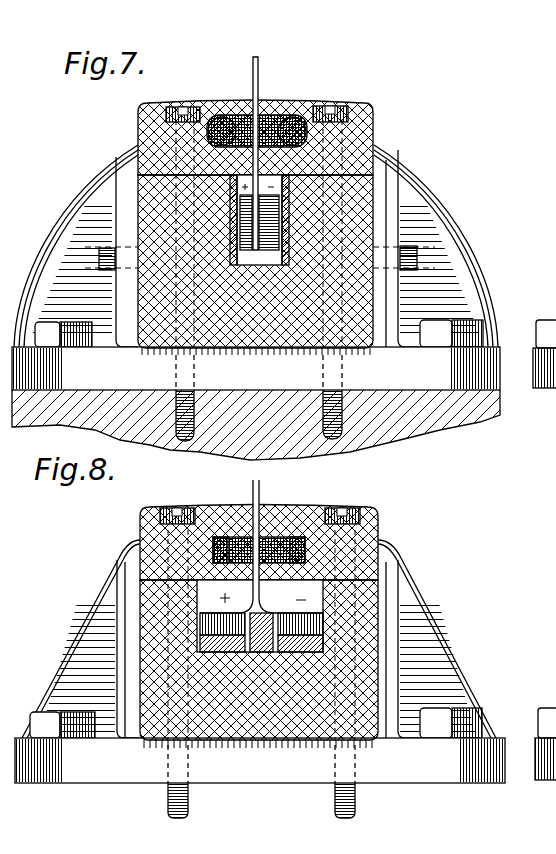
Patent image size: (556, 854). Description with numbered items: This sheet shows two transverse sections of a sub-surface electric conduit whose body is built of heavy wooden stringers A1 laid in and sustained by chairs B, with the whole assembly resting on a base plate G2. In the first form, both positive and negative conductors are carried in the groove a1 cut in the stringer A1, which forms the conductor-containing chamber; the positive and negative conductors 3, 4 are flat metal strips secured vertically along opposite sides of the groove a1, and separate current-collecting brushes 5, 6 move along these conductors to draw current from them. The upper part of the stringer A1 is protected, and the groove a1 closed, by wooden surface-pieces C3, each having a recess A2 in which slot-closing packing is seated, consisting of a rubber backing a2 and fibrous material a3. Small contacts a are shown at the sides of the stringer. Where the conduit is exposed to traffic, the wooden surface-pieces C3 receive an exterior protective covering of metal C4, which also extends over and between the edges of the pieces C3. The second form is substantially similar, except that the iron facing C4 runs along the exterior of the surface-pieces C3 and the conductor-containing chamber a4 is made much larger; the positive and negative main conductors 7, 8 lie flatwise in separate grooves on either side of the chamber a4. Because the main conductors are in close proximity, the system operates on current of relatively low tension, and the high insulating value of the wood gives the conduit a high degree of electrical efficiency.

In FIG. 7, the surface-pieces C3 is at (228, 100).
In FIG. 8, the surface-pieces C3 is at (140, 530).
In FIG. 8, the protective covering of metal C4 is at (232, 510).
In FIG. 7, the fibrous material a3 is at (266, 100).
In FIG. 8, the fibrous material a3 is at (268, 520).
In FIG. 7, the recesses A2 is at (284, 100).
In FIG. 8, the recesses A2 is at (290, 514).
In FIG. 7, the rubber backing a2 is at (316, 102).
In FIG. 8, the rubber backing a2 is at (330, 508).
In FIG. 7, the contact a is at (98, 254).
In FIG. 7, the groove a1 is at (300, 268).
In FIG. 8, the conductor-containing chamber a4 is at (260, 566).
In FIG. 7, the chairs B is at (36, 282).
In FIG. 8, the chairs B is at (447, 642).
In FIG. 7, the wooden stringers A1 is at (138, 290).
In FIG. 8, the wooden stringers A1 is at (172, 744).
In FIG. 7, the base plate G2 is at (256, 403).
In FIG. 8, the base plate G2 is at (260, 778).
In FIG. 7, the positive conductor 3 is at (214, 215).
In FIG. 7, the negative conductor 4 is at (302, 209).
In FIG. 7, the current-collecting brush 5 is at (247, 252).
In FIG. 7, the current-collecting brush 6 is at (270, 252).
In FIG. 8, the positive main conductor 7 is at (236, 645).
In FIG. 8, the negative main conductor 8 is at (300, 645).